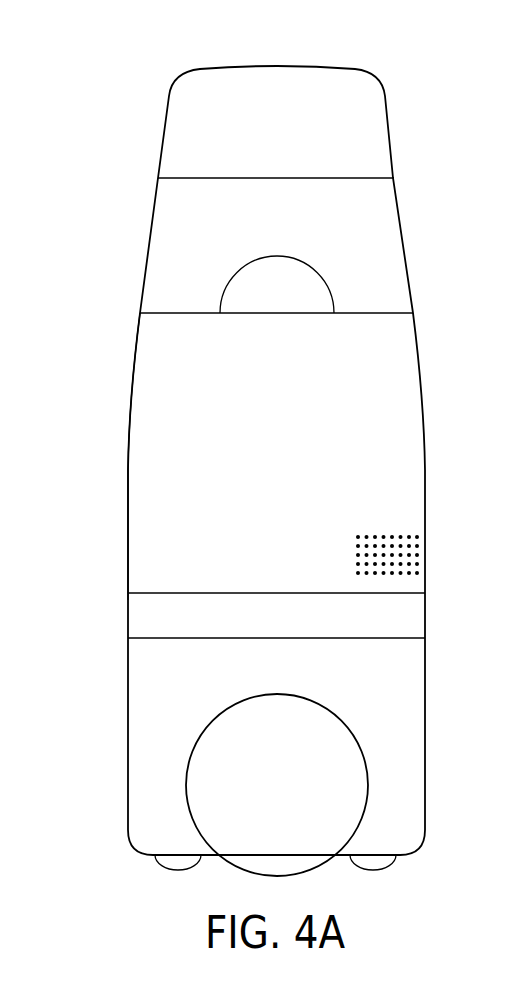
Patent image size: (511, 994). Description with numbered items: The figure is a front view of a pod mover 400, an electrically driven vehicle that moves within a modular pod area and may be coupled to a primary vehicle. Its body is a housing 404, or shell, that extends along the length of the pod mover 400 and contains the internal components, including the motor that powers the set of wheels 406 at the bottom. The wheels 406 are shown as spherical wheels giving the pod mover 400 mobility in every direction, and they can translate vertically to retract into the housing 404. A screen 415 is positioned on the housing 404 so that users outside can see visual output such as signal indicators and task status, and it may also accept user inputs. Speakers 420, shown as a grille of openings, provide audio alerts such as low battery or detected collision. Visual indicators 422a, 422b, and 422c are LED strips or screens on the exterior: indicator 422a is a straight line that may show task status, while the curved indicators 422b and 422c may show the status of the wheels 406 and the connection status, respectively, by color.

The pod mover 400 is at (241, 60).
The housing 404 is at (150, 238).
The screen 415 is at (138, 360).
The speakers 420 is at (392, 535).
The visual indicator 422a is at (143, 637).
The visual indicator 422b is at (220, 710).
The visual indicator 422c is at (252, 258).
The set of wheels 406 is at (357, 866).